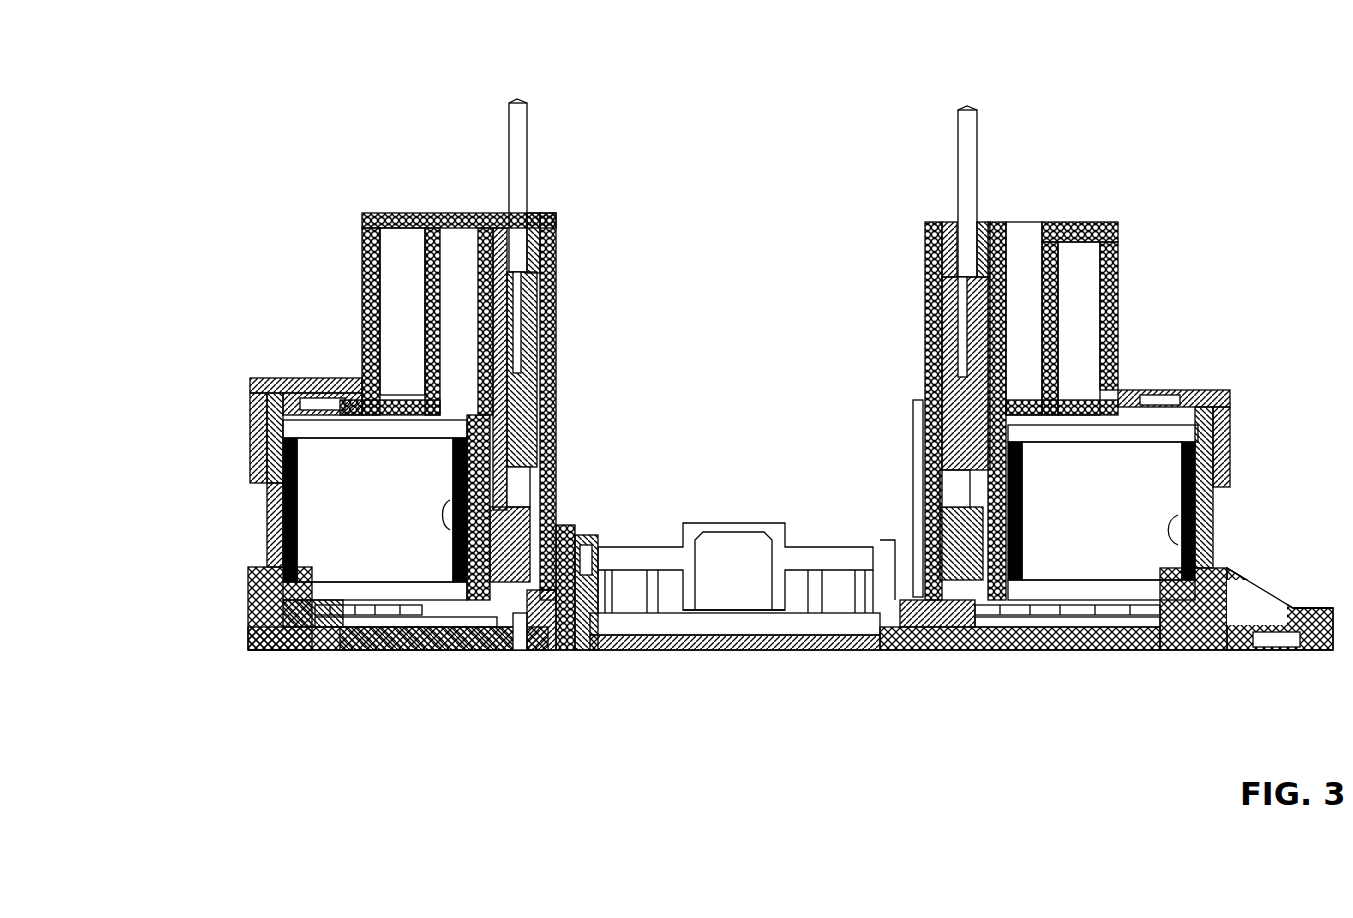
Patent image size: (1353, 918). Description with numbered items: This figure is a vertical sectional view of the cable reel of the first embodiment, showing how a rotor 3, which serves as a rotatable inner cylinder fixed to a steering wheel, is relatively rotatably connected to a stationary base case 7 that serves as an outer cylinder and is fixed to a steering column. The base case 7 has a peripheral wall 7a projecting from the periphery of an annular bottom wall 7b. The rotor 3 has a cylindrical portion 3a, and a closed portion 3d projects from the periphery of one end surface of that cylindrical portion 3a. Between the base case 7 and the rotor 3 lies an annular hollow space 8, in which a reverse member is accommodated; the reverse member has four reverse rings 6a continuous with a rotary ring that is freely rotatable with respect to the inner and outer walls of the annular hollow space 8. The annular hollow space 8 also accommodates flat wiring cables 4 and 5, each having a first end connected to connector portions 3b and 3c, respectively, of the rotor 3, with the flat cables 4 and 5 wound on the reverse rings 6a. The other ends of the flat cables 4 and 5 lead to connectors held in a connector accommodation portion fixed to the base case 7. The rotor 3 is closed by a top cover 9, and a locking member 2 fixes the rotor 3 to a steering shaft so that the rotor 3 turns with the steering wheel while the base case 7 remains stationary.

The locking member 2 is at (250, 392).
The rotor 3 is at (357, 362).
The cylindrical portion 3a is at (555, 390).
The connector portion 3b is at (553, 320).
The connector portion 3c is at (925, 397).
The closed portion 3d is at (557, 245).
The flat wiring cable 4 is at (555, 462).
The flat wiring cable 5 is at (1213, 525).
The reverse ring 6a is at (555, 435).
The base case 7 is at (245, 590).
The peripheral wall 7a is at (267, 500).
The annular bottom wall 7b is at (388, 652).
The annular hollow space 8 is at (1170, 392).
The top cover 9 is at (580, 652).